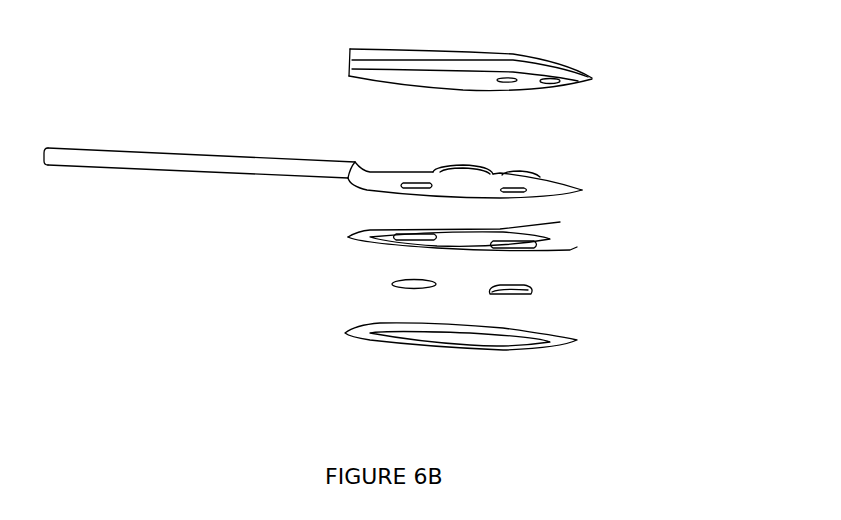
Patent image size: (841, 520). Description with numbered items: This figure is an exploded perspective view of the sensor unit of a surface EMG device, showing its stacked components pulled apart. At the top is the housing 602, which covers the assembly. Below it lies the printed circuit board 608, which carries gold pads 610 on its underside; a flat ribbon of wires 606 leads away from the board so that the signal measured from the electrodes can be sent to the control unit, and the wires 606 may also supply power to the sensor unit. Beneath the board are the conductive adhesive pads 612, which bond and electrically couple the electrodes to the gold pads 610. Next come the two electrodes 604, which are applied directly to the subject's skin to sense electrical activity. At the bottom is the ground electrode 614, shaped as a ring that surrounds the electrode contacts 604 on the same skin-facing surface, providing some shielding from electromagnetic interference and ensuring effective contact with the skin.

The housing 602 is at (596, 73).
The electrodes 604 is at (488, 292).
The wires 606 is at (97, 167).
The printed circuit board 608 is at (583, 188).
The gold pads 610 is at (400, 188).
The conductive adhesive pads 612 is at (577, 247).
The ground electrode 614 is at (385, 338).